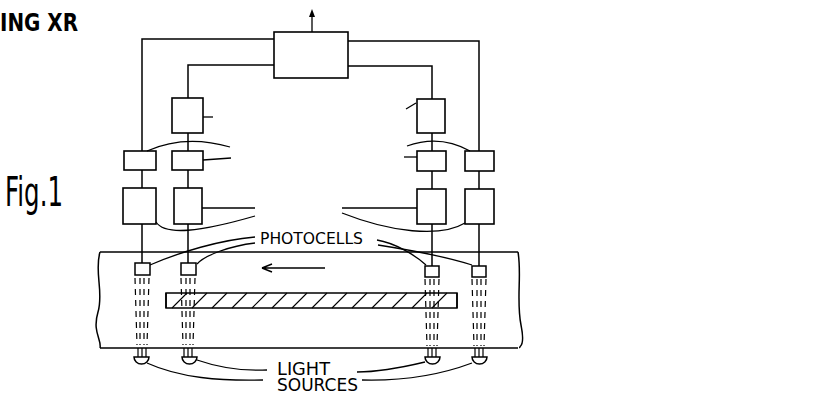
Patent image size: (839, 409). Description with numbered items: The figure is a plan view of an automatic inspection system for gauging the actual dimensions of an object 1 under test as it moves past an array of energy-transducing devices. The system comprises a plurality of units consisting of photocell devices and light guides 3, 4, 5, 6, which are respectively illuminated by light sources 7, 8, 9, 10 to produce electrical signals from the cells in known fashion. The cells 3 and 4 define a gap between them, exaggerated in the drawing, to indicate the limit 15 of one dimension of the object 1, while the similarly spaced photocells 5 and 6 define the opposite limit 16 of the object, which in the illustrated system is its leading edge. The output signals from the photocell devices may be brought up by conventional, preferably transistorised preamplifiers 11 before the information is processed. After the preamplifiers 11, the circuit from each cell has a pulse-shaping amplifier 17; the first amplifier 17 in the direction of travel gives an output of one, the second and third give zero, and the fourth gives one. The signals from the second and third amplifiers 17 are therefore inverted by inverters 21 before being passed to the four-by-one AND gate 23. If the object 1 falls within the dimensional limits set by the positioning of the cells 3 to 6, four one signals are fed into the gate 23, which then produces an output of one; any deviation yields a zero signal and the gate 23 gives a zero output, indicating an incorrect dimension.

The object under test 1 is at (292, 308).
The photocell device 3 is at (487, 269).
The photocell device 4 is at (440, 272).
The photocell device 5 is at (197, 273).
The photocell device 6 is at (133, 269).
The light source 7 is at (488, 362).
The light source 8 is at (426, 356).
The light source 9 is at (193, 355).
The light source 10 is at (134, 361).
The preamplifier 11 is at (485, 214).
The limit of one dimension 15 is at (440, 300).
The opposite limit 16 is at (165, 295).
The pulse-shaping amplifier 17 is at (485, 168).
The inverter 21 is at (180, 125).
The 4X1 AND gate 23 is at (339, 29).